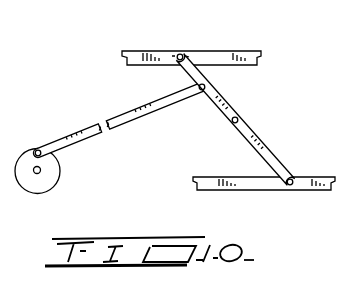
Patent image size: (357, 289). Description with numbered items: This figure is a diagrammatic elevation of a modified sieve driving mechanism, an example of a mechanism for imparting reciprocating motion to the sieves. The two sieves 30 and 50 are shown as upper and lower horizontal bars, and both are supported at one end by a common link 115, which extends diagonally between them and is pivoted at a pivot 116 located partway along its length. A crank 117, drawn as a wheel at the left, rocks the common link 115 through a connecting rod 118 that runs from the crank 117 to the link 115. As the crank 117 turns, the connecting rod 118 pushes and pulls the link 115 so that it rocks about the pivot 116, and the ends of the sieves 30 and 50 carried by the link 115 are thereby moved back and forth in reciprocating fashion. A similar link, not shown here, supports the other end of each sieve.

The sieve 30 is at (208, 62).
The sieve 50 is at (265, 181).
The common link 115 is at (250, 131).
The pivot 116 is at (237, 117).
The crank 117 is at (52, 174).
The connecting rod 118 is at (160, 102).